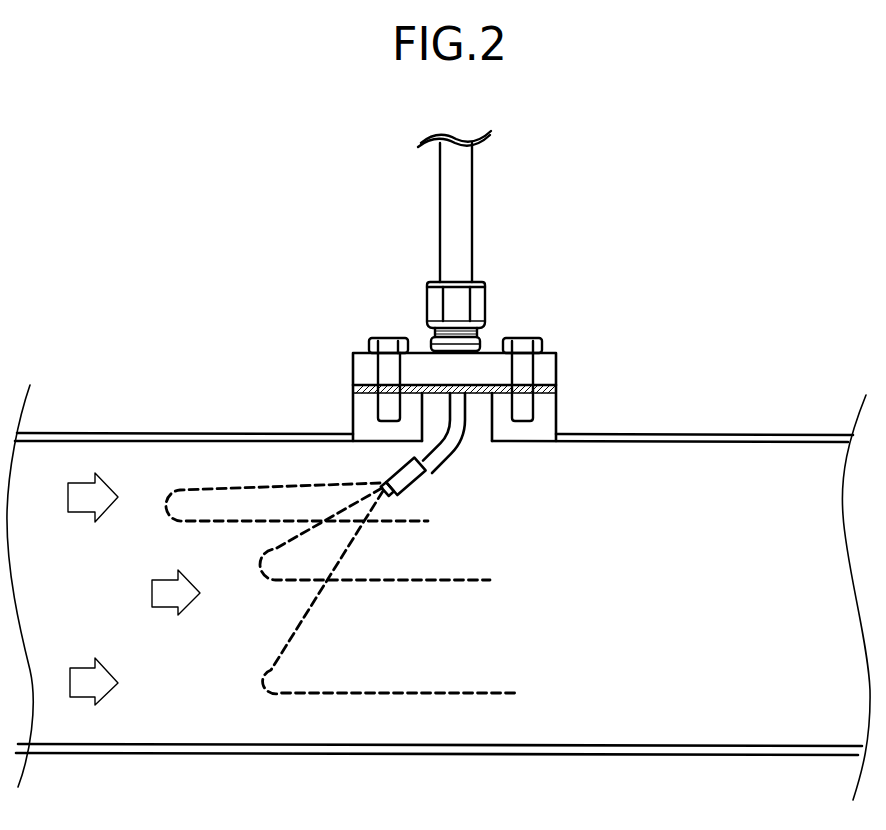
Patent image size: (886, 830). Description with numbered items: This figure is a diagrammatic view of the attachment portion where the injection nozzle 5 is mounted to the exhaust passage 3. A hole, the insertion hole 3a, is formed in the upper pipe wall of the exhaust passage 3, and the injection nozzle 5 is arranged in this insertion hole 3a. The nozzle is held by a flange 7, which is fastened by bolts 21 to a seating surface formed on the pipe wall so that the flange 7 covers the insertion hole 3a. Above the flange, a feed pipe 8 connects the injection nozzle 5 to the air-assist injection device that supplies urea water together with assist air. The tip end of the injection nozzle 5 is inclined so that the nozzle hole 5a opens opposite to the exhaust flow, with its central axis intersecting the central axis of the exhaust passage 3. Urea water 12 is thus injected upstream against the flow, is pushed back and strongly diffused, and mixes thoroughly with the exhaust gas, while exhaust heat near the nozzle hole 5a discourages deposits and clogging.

The exhaust passage 3 is at (268, 756).
The insertion hole 3a is at (472, 440).
The injection nozzle 5 is at (453, 463).
The nozzle hole 5a is at (380, 474).
The flange 7 is at (557, 367).
The feed pipe 8 is at (438, 200).
The urea water 12 is at (174, 490).
The bolts 21 is at (386, 340).